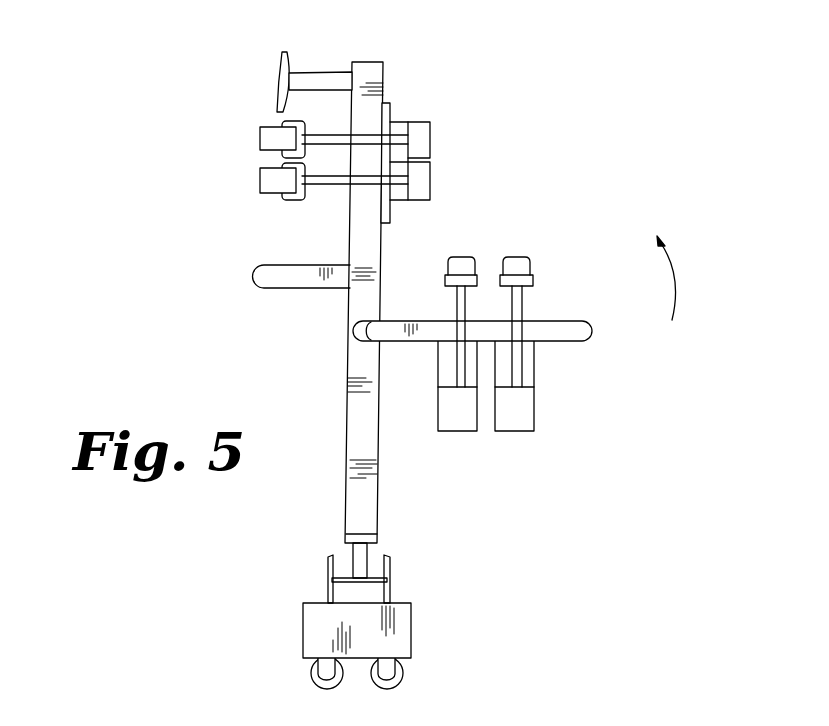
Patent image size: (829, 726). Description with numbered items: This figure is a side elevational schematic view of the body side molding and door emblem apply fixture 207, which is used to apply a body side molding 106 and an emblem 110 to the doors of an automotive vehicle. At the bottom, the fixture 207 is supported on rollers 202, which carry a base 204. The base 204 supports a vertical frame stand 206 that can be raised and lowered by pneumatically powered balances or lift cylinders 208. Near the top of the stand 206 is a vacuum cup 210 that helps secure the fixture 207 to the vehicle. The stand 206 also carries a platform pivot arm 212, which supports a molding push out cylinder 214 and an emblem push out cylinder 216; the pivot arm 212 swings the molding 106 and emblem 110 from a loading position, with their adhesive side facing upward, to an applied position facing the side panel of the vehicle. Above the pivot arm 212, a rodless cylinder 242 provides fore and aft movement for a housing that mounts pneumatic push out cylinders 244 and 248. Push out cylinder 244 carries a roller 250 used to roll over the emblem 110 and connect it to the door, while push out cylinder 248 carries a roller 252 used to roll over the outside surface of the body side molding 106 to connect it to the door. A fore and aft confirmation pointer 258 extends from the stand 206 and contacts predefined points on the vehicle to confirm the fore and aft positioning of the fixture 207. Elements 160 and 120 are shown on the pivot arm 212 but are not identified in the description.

The rollers 202 is at (403, 676).
The bases 204 is at (411, 618).
The frame stand 206 is at (380, 470).
The body side molding and door emblem apply fixture 207 is at (458, 61).
The lift cylinders 208 is at (390, 565).
The vacuum cups 210 is at (288, 57).
The platform pivot arm 212 is at (576, 322).
The molding push out cylinder 214 is at (468, 432).
The emblem push out cylinder 216 is at (526, 432).
The rodless cylinder 242 is at (391, 104).
The push out cylinder 244 is at (430, 140).
The push out cylinder 248 is at (430, 178).
The roller 250 is at (260, 137).
The roller 252 is at (260, 180).
The fore and aft confirmation pointer 258 is at (264, 288).
The mounting stand 160 is at (445, 279).
The mounting stand 120 is at (535, 283).
The body side molding 106 is at (463, 258).
The emblem 110 is at (512, 258).